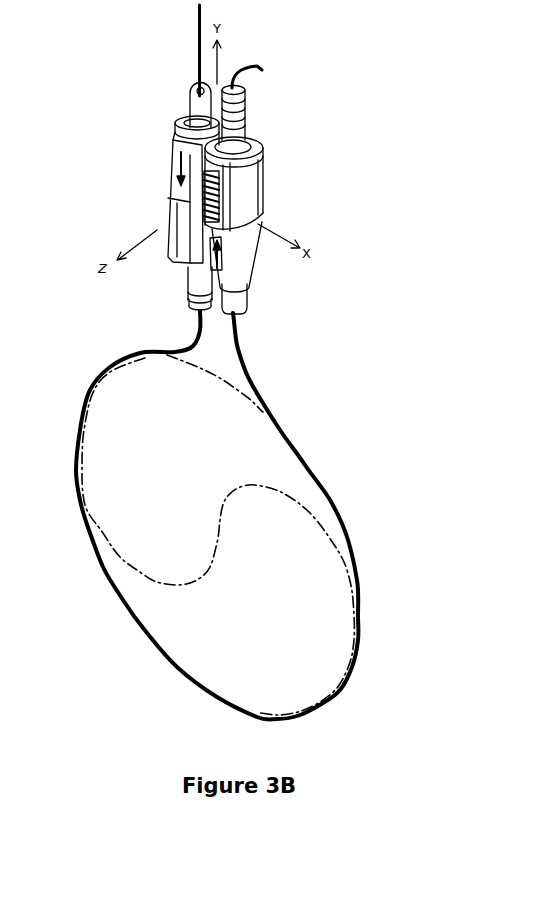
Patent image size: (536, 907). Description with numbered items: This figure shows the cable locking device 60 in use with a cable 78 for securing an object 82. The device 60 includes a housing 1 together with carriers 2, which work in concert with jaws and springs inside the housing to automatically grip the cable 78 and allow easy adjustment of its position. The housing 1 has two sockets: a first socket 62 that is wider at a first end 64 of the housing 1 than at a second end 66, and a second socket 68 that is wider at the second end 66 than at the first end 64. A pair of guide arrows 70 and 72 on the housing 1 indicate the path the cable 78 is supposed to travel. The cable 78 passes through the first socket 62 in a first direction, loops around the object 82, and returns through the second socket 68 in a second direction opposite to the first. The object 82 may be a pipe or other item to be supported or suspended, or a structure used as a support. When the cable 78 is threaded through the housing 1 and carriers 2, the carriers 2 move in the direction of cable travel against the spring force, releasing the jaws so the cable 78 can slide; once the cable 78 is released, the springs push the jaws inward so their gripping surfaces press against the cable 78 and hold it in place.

The housing 1 is at (248, 192).
The carriers 2 is at (205, 100).
The cable locking device 60 is at (140, 170).
The first socket 62 is at (176, 81).
The first end 64 is at (181, 130).
The second end 66 is at (180, 268).
The second socket 68 is at (276, 130).
The guide arrow 70 is at (173, 183).
The guide arrow 72 is at (222, 252).
The cable 78 is at (243, 363).
The object 82 is at (187, 443).